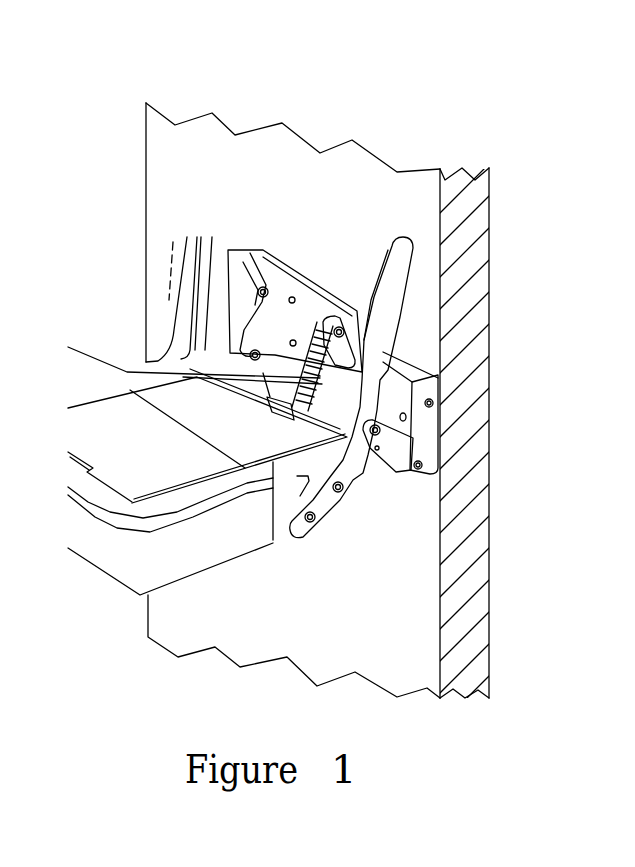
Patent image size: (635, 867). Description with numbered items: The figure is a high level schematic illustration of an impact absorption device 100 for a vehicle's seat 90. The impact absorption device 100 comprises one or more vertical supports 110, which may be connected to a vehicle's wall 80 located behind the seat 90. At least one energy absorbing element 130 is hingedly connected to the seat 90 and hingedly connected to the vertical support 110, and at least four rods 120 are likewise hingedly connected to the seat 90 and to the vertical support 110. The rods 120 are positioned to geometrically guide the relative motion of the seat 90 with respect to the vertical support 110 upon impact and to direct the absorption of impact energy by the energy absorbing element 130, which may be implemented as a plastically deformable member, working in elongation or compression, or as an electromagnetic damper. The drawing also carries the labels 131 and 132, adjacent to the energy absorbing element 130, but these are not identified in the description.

The impact absorption device 100 is at (118, 57).
The vehicle's wall 80 is at (489, 247).
The vehicle's seat 90 is at (352, 477).
The vertical support 110 is at (433, 456).
The rods 120 is at (238, 270).
The energy absorbing element 130 is at (240, 340).
The spring end 131 is at (263, 373).
The pivot pin 132 is at (340, 327).